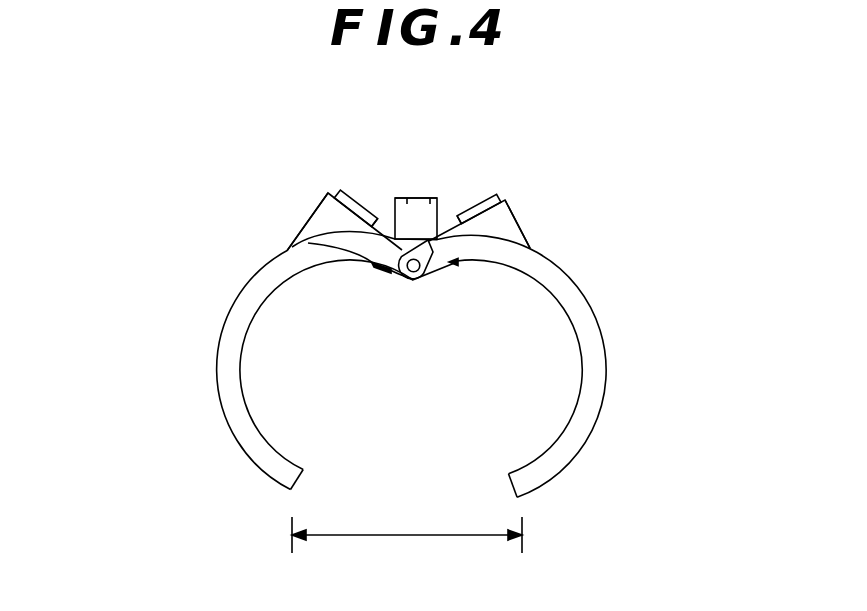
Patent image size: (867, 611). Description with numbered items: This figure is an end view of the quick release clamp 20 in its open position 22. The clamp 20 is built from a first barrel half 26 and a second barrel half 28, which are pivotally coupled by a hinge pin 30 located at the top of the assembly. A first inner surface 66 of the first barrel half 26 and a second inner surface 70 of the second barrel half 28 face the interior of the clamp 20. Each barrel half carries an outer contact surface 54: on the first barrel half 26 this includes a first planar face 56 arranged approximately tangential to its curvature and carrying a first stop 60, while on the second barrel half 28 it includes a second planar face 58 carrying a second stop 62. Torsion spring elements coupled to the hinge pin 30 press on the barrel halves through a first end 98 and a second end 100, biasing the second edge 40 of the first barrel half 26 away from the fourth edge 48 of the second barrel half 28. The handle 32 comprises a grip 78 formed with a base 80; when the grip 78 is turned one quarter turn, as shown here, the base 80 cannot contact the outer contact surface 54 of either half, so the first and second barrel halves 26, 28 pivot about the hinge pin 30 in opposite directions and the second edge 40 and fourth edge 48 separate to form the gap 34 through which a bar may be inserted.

The quick release clamp 20 is at (713, 519).
The open position 22 is at (93, 281).
The first barrel half 26 is at (594, 330).
The second barrel half 28 is at (232, 325).
The hinge pin 30 is at (413, 272).
The handle 32 is at (407, 198).
The gap 34 is at (377, 535).
The second edge 40 is at (517, 498).
The fourth edge 48 is at (291, 492).
The outer contact surface 54 is at (327, 191).
The first planar face 56 is at (456, 222).
The second planar face 58 is at (379, 221).
The first stop 60 is at (499, 195).
The second stop 62 is at (340, 190).
The first inner surface 66 is at (581, 375).
The second inner surface 70 is at (242, 362).
The grip 78 is at (430, 198).
The base 80 is at (310, 244).
The first end 98 is at (456, 268).
The second end 100 is at (381, 272).